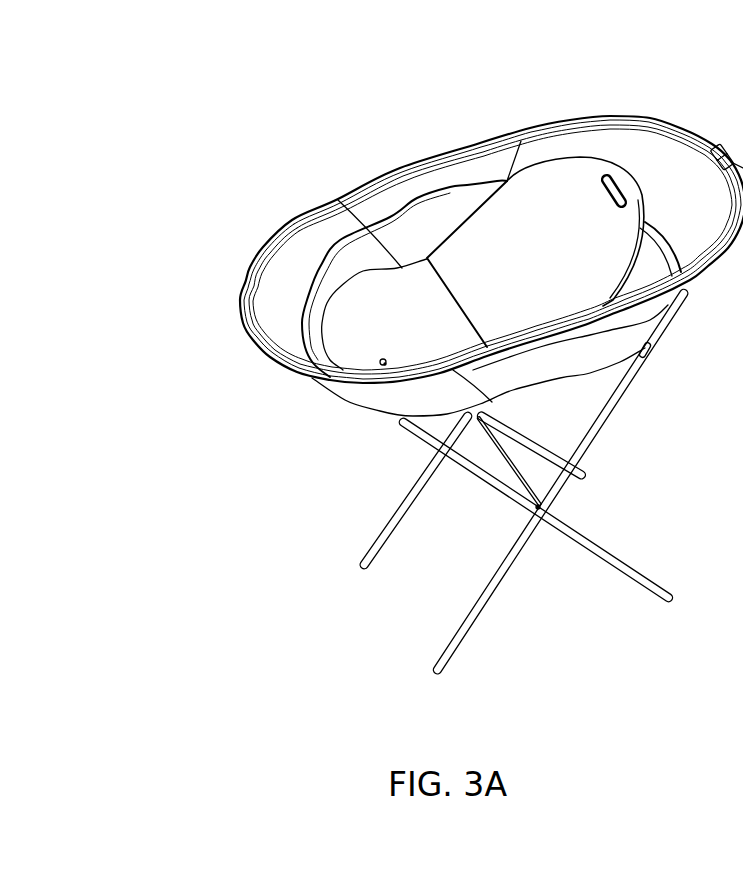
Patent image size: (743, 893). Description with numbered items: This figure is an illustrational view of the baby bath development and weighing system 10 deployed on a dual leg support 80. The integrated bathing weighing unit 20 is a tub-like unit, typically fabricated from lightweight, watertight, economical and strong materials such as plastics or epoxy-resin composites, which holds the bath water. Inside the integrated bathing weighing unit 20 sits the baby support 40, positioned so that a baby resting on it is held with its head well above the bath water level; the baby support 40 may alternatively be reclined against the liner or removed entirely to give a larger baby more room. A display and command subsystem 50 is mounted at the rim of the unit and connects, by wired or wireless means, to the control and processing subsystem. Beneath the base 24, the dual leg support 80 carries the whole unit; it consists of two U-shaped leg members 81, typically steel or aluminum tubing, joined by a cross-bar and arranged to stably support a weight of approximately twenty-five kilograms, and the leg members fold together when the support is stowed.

The baby bath development and weighing system 10 is at (278, 89).
The integrated bathing weighing unit 20 is at (295, 223).
The base 24 is at (583, 383).
The baby support 40 is at (550, 168).
The display and command subsystem 50 is at (717, 142).
The dual leg support 80 is at (295, 634).
The U shaped leg members 81 is at (603, 417).